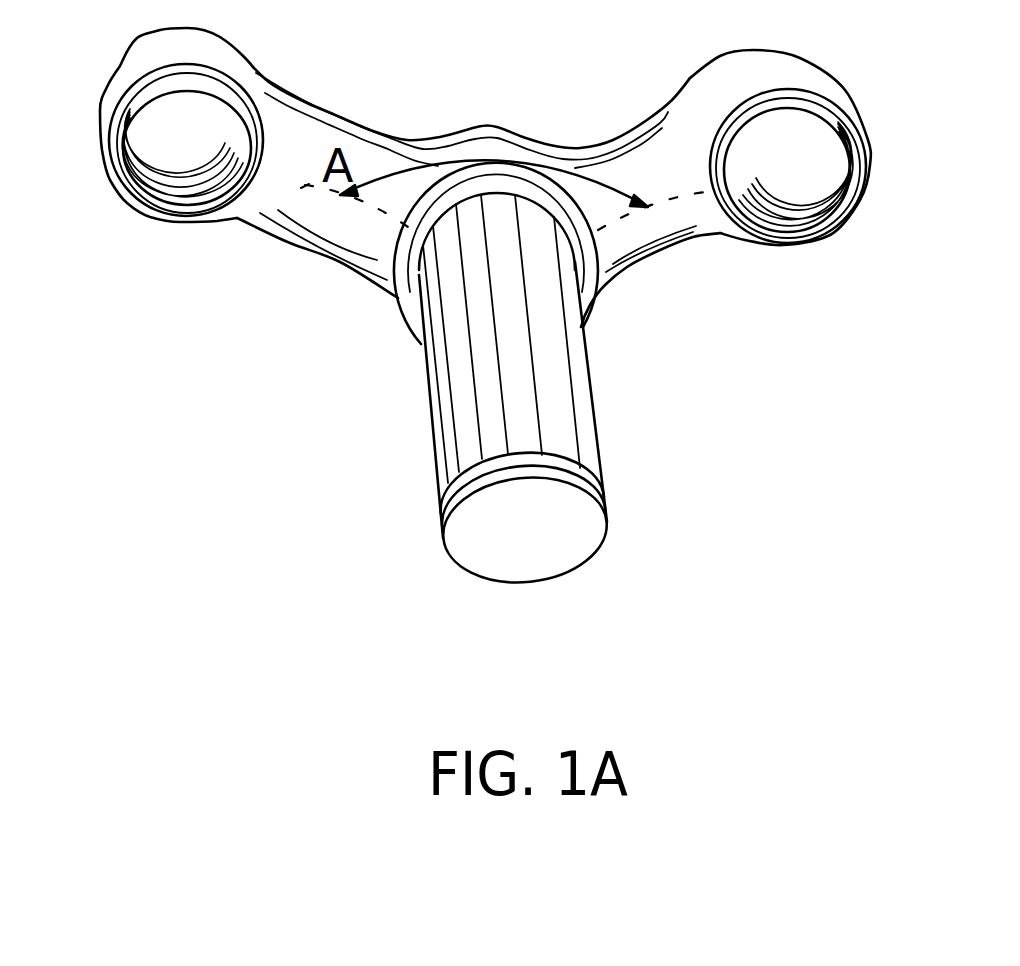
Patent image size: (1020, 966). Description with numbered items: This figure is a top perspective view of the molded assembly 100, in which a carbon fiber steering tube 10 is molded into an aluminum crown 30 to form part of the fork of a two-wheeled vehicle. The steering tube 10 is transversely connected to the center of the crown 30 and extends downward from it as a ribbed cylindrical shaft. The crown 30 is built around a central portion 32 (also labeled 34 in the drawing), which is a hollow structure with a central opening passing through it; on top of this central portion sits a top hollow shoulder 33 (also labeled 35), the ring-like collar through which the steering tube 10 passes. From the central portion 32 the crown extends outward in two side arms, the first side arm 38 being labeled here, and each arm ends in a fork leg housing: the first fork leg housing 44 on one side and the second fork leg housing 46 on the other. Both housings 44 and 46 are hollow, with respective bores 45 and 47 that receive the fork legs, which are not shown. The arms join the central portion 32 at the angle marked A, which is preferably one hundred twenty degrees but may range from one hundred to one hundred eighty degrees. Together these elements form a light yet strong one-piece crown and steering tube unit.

The molded assembly 100 is at (208, 500).
The steering tube 10 is at (424, 508).
The crown 30 is at (668, 276).
The central portion 32 is at (471, 99).
The upper arm rib 34 is at (500, 150).
The top hollow shoulder 33 is at (324, 294).
The lower arm rib 35 is at (412, 302).
The first side arm 38 is at (308, 186).
The first fork leg housing 44 is at (136, 60).
The bore 45 is at (157, 160).
The second fork leg housing 46 is at (787, 70).
The bore 47 is at (799, 177).